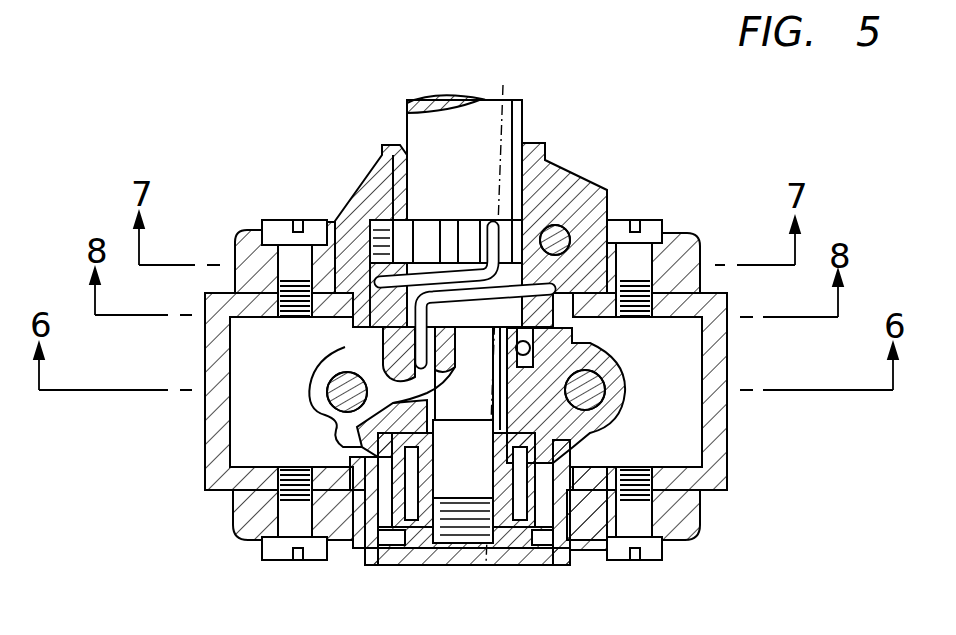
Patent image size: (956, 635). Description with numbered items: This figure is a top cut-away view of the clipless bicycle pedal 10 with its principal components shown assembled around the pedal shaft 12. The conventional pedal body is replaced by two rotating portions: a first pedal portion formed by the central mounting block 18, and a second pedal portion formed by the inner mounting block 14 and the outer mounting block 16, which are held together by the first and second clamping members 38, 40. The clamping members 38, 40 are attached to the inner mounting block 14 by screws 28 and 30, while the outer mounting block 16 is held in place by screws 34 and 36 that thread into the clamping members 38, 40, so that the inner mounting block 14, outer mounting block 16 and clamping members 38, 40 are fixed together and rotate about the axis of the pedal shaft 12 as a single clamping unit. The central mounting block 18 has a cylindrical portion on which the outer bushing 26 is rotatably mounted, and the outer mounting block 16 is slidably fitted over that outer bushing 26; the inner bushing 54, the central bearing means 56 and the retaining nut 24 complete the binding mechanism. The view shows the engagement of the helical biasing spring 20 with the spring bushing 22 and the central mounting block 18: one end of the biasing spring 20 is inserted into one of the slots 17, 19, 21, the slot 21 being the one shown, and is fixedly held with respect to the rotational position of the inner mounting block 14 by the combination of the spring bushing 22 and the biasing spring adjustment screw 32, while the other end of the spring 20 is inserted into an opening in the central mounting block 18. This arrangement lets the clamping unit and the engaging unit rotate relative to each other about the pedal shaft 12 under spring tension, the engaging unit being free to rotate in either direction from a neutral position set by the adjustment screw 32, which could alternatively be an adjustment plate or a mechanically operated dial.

The clipless bicycle pedal 10 is at (730, 149).
The pedal shaft 12 is at (420, 118).
The inner mounting block 14 is at (385, 175).
The outer mounting block 16 is at (590, 530).
The slot 17 is at (435, 225).
The central mounting block 18 is at (322, 416).
The slot 19 is at (466, 233).
The helical biasing spring 20 is at (400, 300).
The slot 21 is at (495, 227).
The spring bushing 22 is at (410, 231).
The retaining nut 24 is at (423, 523).
The outer bushing 26 is at (480, 565).
The screw 28 is at (275, 227).
The screw 30 is at (650, 222).
The biasing spring adjustment screw 32 is at (562, 232).
The screw 34 is at (278, 552).
The screw 36 is at (663, 560).
The first clamping member 38 is at (727, 437).
The second clamping member 40 is at (212, 440).
The inner bushing 54 is at (528, 145).
The central bearing means 56 is at (553, 463).